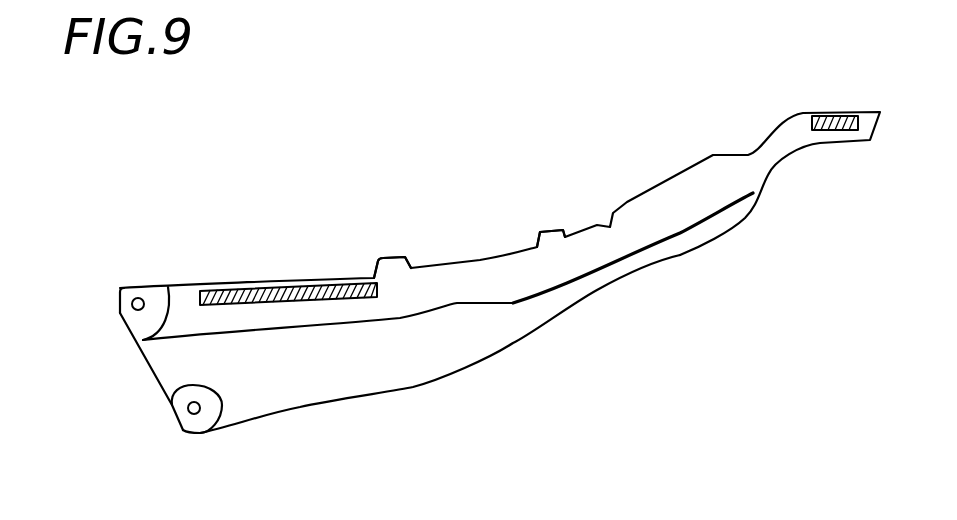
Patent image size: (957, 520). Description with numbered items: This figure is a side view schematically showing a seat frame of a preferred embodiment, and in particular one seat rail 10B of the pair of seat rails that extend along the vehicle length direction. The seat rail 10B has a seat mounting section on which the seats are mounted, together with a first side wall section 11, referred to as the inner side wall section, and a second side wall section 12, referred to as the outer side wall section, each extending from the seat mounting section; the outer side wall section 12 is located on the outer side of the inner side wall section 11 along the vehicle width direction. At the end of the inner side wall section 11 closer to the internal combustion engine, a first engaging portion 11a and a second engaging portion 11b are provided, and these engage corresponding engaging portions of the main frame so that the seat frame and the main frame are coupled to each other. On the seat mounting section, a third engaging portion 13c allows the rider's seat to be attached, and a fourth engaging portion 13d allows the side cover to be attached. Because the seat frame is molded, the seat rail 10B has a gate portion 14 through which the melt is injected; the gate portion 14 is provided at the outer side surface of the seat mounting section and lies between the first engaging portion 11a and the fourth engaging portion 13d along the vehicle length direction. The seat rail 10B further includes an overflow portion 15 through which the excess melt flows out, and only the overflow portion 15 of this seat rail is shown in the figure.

The seat rail 10B is at (463, 196).
The first side wall section 11 is at (402, 375).
The first engaging portion 11a is at (118, 300).
The second engaging portion 11b is at (177, 405).
The second side wall section 12 is at (593, 250).
The third engaging portion 13c is at (553, 232).
The fourth engaging portion 13d is at (388, 257).
The gate portion 14 is at (282, 285).
The overflow portion 15 is at (828, 112).